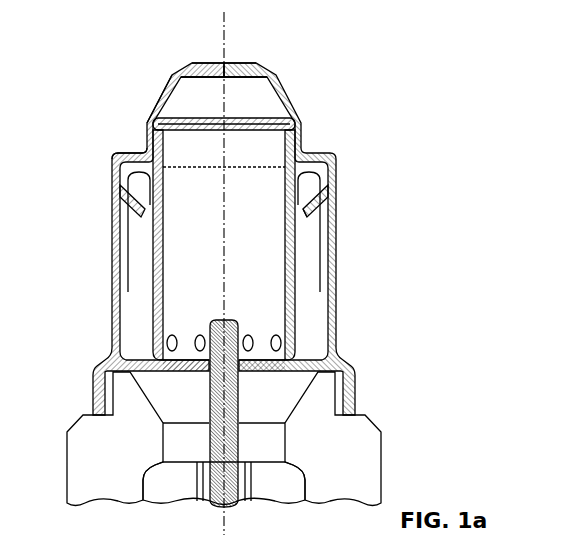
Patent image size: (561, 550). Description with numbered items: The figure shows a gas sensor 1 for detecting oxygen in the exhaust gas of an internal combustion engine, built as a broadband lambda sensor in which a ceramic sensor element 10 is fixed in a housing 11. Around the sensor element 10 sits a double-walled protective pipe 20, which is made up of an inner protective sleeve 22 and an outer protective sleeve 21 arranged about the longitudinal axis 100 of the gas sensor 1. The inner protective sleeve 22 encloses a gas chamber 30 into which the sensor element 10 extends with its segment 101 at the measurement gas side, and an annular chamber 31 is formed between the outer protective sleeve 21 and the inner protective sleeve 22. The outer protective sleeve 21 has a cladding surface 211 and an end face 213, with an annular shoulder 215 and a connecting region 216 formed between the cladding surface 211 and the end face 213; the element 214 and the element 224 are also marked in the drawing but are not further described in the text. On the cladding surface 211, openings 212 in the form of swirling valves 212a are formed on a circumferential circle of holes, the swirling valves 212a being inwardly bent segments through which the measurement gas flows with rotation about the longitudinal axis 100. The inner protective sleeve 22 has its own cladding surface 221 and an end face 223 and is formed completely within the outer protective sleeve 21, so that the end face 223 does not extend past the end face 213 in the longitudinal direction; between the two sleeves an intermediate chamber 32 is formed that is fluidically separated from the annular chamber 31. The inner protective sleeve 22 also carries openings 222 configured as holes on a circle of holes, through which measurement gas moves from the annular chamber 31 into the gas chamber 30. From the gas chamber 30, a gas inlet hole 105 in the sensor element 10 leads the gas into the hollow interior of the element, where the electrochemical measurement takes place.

The gas sensor 1 is at (345, 41).
The sensor element 10 is at (216, 506).
The housing 11 is at (372, 465).
The double-walled protective pipe 20 is at (345, 159).
The outer protective sleeve 21 is at (258, 239).
The cladding surface 211 is at (337, 265).
The inner protective sleeve 22 is at (288, 245).
The cladding surface 221 is at (300, 303).
The openings 222 is at (272, 322).
The end face 223 is at (263, 117).
The sealing rim 224 is at (283, 120).
The openings 212 is at (332, 220).
The swirling valves 212a is at (323, 208).
The end face 213 is at (259, 68).
The top surface 214 is at (215, 63).
The annular shoulder 215 is at (133, 150).
The connecting region 216 is at (163, 94).
The gas chamber 30 is at (246, 251).
The annular chamber 31 is at (137, 273).
The intermediate chamber 32 is at (221, 104).
The longitudinal axis 100 is at (227, 28).
The segment at the measurement gas side 101 is at (166, 352).
The gas inlet hole 105 is at (208, 326).